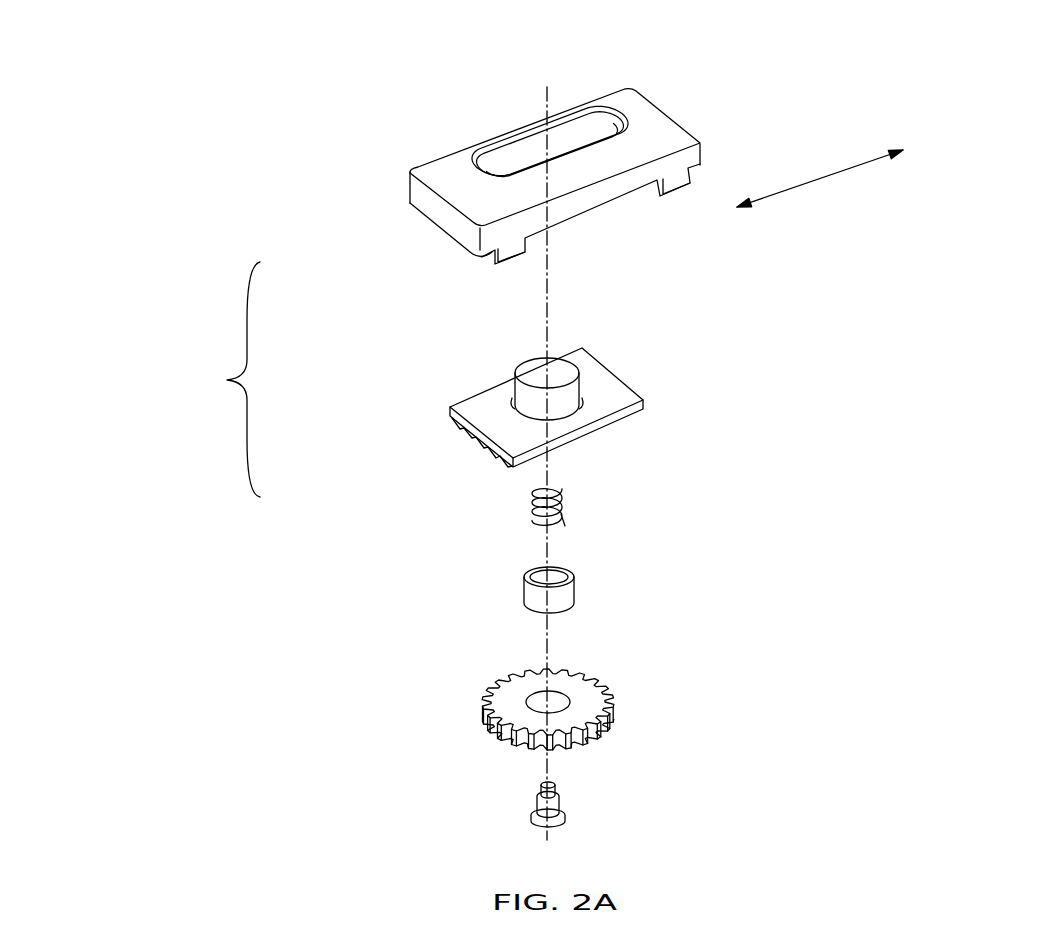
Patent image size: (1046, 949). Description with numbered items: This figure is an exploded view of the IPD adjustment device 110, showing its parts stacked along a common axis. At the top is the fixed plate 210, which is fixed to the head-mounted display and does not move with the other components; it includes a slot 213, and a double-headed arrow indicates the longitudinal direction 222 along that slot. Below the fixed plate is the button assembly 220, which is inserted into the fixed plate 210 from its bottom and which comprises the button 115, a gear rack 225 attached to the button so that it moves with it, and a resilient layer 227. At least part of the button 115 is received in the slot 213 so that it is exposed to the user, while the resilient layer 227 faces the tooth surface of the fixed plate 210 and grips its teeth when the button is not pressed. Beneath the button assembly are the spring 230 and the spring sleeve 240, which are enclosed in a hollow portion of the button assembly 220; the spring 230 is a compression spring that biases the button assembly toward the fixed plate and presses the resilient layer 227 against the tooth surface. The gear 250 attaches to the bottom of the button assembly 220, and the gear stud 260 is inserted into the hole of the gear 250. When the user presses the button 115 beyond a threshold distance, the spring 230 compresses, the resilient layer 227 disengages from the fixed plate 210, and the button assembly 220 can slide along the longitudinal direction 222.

The IPD adjustment device 110 is at (597, 29).
The slot 213 is at (525, 167).
The fixed plate 210 is at (583, 183).
The longitudinal direction 222 is at (823, 178).
The button assembly 220 is at (165, 434).
The button 115 is at (513, 373).
The resilient layer 227 is at (487, 410).
The gear rack 225 is at (463, 427).
The spring 230 is at (575, 507).
The spring sleeve 240 is at (592, 590).
The gear 250 is at (620, 713).
The gear stud 260 is at (573, 803).